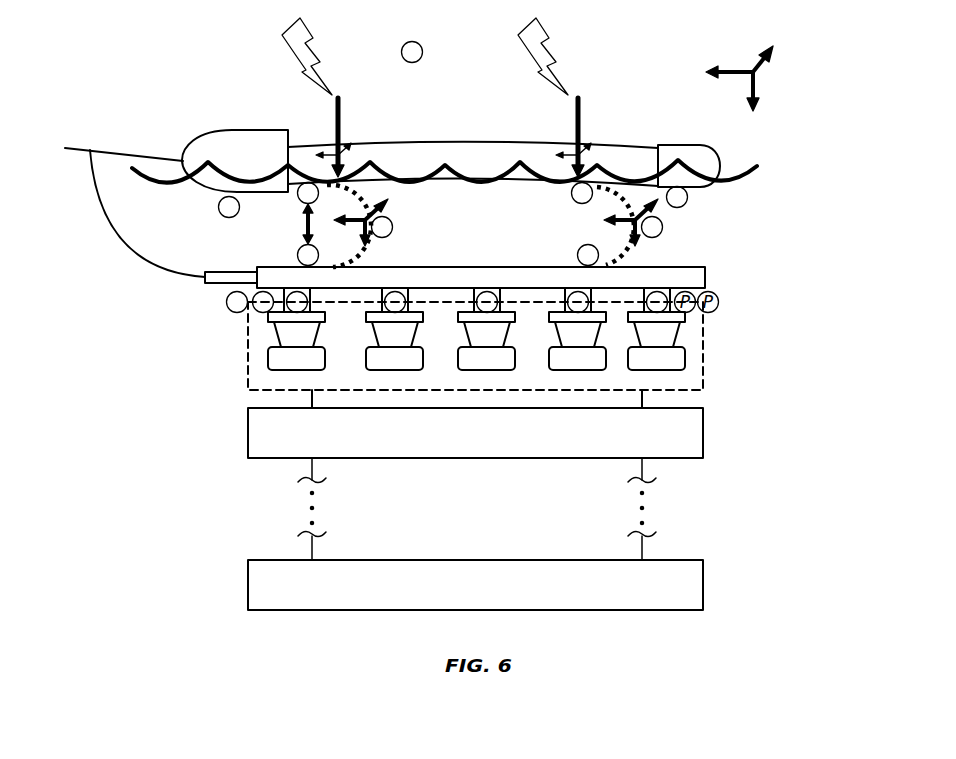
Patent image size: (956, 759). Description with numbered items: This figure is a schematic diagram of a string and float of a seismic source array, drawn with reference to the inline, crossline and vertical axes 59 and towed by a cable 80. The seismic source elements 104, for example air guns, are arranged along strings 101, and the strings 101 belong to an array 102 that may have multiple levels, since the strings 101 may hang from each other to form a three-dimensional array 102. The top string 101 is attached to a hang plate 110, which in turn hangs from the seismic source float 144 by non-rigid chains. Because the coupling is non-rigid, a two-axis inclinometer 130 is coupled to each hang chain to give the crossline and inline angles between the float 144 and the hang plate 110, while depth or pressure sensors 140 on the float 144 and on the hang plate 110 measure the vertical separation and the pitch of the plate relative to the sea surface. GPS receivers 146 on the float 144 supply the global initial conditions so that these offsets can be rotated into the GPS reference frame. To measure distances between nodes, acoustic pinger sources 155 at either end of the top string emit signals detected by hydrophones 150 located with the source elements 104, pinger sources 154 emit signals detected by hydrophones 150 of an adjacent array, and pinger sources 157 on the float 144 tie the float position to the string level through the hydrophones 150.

The axes 59 is at (765, 78).
The tow cable 80 is at (161, 205).
The string 101 is at (523, 452).
The array 102 is at (224, 446).
The seismic source element 104 is at (380, 370).
The hang plate 110 is at (523, 262).
The inclinometer 130 is at (672, 242).
The depth sensor 140 is at (296, 199).
The seismic source float 144 is at (444, 146).
The GPS receiver 146 is at (340, 112).
The hydrophone 150 is at (657, 291).
The acoustic pinger source 154 is at (211, 312).
The acoustic pinger source 155 is at (224, 323).
The acoustic pinger source 157 is at (469, 202).